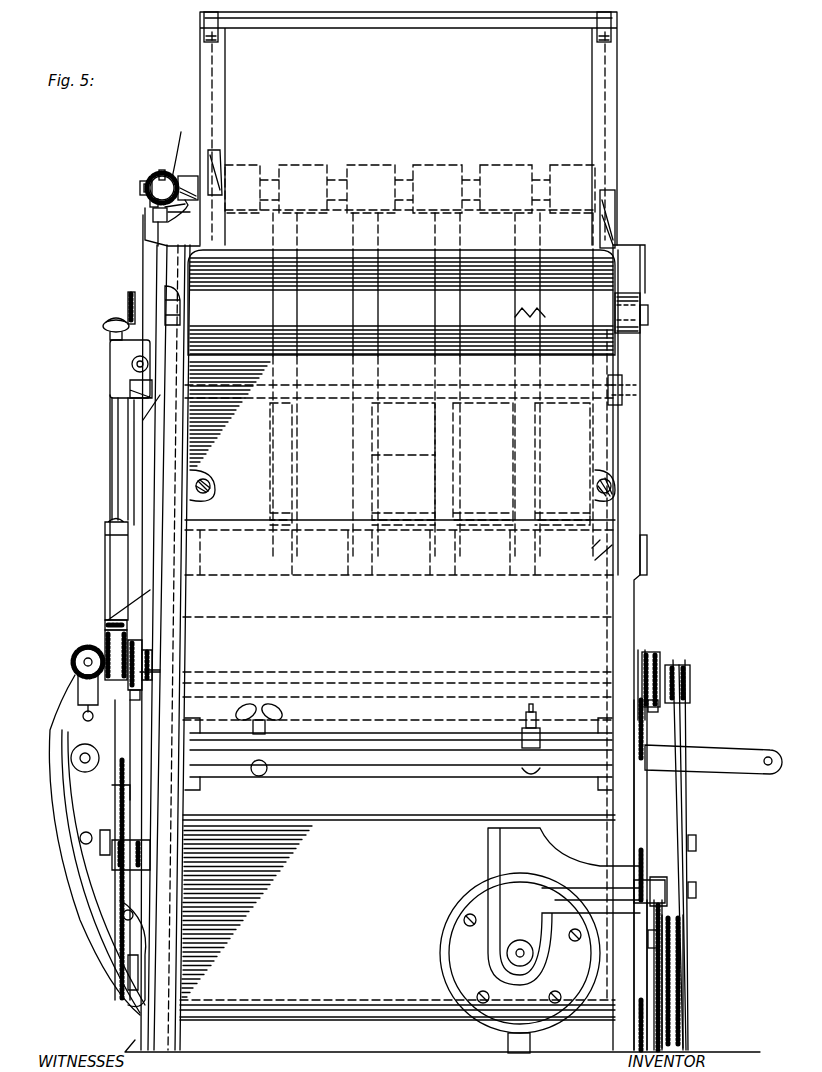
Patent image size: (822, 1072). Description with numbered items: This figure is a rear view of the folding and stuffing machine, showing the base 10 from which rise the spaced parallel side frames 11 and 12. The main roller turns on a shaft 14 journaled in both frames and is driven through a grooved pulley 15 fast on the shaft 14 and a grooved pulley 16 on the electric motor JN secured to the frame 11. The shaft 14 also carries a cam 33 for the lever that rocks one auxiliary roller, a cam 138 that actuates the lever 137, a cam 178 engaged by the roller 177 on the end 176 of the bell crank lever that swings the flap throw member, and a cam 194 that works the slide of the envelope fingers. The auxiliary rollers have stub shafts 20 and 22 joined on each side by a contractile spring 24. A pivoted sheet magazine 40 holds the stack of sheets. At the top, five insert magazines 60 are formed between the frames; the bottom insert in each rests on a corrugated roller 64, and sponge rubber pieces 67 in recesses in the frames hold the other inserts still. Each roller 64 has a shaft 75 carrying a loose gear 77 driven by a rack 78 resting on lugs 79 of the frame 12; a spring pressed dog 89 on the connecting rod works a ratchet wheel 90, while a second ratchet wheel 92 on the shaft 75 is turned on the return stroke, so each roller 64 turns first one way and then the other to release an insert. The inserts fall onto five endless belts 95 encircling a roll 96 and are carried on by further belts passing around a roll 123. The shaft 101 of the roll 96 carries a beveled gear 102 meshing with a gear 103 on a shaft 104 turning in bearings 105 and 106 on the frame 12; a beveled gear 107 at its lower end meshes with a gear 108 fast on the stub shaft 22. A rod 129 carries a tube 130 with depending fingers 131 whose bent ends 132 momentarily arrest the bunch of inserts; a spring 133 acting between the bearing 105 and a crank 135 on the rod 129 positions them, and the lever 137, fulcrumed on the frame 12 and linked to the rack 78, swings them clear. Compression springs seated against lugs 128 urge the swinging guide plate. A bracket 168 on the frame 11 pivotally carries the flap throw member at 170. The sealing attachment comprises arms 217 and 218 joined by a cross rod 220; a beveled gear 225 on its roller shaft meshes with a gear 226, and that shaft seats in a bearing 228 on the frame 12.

The base 10 is at (115, 1050).
The side frame 11 is at (632, 477).
The side frame 12 is at (165, 443).
The shaft 14 is at (104, 830).
The grooved pulley 15 is at (690, 812).
The grooved pulley 16 is at (682, 925).
The stub shaft 20 is at (142, 690).
The stub shaft 22 is at (160, 648).
The contractile spring 24 is at (150, 660).
The cam 33 is at (130, 735).
The magazine 40 is at (324, 822).
The magazine 60 is at (578, 118).
The roller 64 is at (348, 165).
The sponge rubber piece 67 is at (218, 178).
The shaft 75 is at (184, 176).
The gear 77 is at (162, 170).
The rack 78 is at (153, 220).
The lug 79 is at (185, 228).
The spring pressed dog 89 is at (150, 205).
The ratchet wheel 90 is at (156, 176).
The ratchet wheel 92 is at (183, 145).
The endless belt 95 is at (530, 304).
The roll 96 is at (607, 285).
The shaft 101 is at (172, 286).
The beveled gear 102 is at (128, 292).
The beveled gear 103 is at (110, 320).
The shaft 104 is at (110, 470).
The bearing 105 is at (130, 364).
The bearing 106 is at (105, 568).
The beveled gear 107 is at (105, 625).
The beveled gear 108 is at (112, 680).
The roll 123 is at (620, 548).
The lug 128 is at (595, 486).
The rod 129 is at (630, 395).
The tube 130 is at (405, 402).
The finger 131 is at (403, 455).
The laterally bent end 132 is at (440, 522).
The spring 133 is at (112, 348).
The crank 135 is at (130, 385).
The lever 137 is at (135, 420).
The cam 138 is at (114, 812).
The bracket 168 is at (748, 746).
The pivot 170 is at (766, 770).
The lever end 176 is at (650, 982).
The roller 177 is at (700, 940).
The cam 178 is at (655, 890).
The cam 194 is at (126, 790).
The arm 217 is at (60, 852).
The arm 218 is at (62, 778).
The cross rod 220 is at (125, 963).
The beveled gear 225 is at (74, 662).
The beveled gear 226 is at (105, 645).
The bearing 228 is at (80, 682).
The motor JN is at (445, 920).